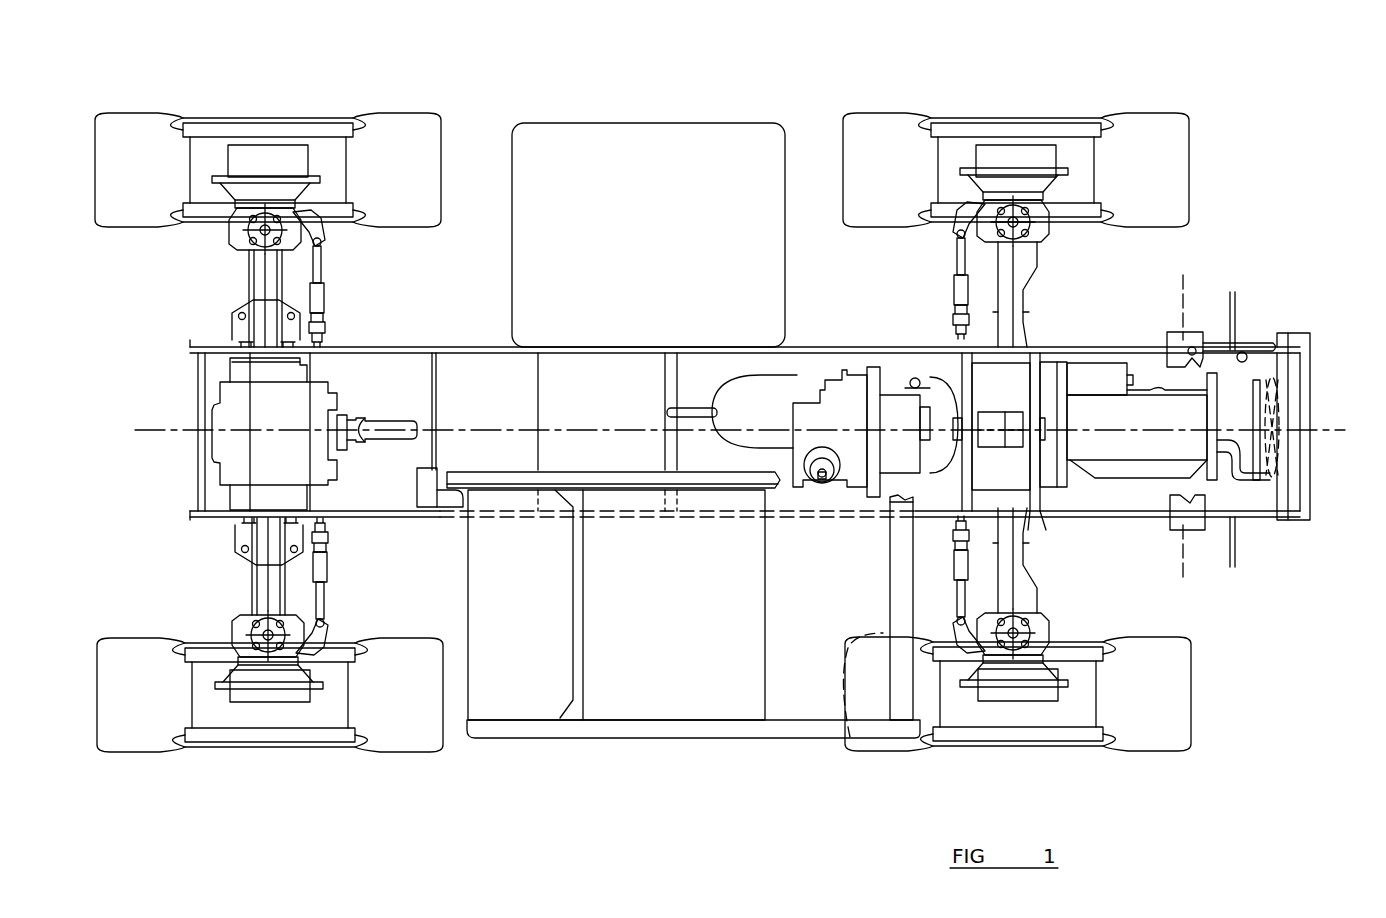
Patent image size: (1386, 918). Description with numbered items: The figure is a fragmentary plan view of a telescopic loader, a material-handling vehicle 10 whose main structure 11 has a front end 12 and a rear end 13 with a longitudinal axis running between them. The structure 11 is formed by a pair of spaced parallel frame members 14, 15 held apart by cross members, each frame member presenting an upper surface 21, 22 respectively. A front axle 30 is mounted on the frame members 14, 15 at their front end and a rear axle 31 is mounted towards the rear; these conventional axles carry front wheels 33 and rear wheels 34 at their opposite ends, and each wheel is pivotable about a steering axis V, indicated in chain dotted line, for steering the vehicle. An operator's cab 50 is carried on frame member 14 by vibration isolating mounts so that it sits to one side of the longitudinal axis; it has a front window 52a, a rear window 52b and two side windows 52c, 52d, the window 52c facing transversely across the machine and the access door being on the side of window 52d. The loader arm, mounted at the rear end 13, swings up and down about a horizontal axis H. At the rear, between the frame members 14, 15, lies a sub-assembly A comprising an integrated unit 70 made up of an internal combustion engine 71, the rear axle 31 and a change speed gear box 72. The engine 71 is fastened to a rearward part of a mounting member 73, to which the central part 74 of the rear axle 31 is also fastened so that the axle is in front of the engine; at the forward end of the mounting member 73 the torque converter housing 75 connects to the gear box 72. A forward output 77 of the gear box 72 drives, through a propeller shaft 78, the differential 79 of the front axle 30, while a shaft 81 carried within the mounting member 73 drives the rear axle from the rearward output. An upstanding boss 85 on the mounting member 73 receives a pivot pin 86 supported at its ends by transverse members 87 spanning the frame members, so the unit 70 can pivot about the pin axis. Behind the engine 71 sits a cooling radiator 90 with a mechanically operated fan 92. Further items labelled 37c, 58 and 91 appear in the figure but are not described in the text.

The material-handling vehicle 10 is at (893, 757).
The main structure 11 is at (798, 318).
The front end 12 is at (185, 757).
The rear end 13 is at (1250, 690).
The frame member 14 is at (200, 515).
The frame member 15 is at (200, 347).
The upper surface 21 is at (398, 520).
The upper surface 22 is at (325, 347).
The front axle 30 is at (257, 587).
The rear axle 31 is at (1040, 560).
The front wheels 33 is at (388, 113).
The rear wheels 34 is at (950, 113).
The longitudinal axis 37c is at (512, 430).
The operator's cab 50 is at (673, 742).
The front window 52a is at (510, 700).
The rear window 52b is at (920, 670).
The side window 52c is at (478, 425).
The side window 52d is at (845, 735).
The coupling 58 is at (940, 470).
The integrated unit 70 is at (1140, 463).
The internal combustion engine 71 is at (1195, 450).
The change speed gear box 72 is at (875, 367).
The mounting member 73 is at (1050, 385).
The central part of rear axle 74 is at (1075, 465).
The torque converter housing 75 is at (882, 420).
The forward output 77 is at (797, 420).
The propeller shaft 78 is at (380, 447).
The differential 79 is at (228, 472).
The shaft 81 is at (443, 513).
The upstanding boss 85 is at (1003, 407).
The pivot pin 86 is at (957, 373).
The transverse members 87 is at (1025, 490).
The cooling radiator 90 is at (1222, 345).
The rear frame member 91 is at (1290, 350).
The fan 92 is at (1282, 392).
The sub-assembly A is at (1095, 280).
The horizontal axis H is at (1182, 428).
The steering axis V is at (260, 233).